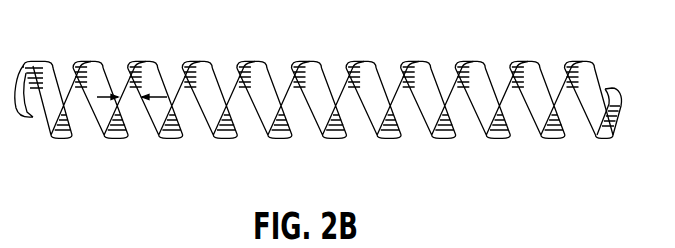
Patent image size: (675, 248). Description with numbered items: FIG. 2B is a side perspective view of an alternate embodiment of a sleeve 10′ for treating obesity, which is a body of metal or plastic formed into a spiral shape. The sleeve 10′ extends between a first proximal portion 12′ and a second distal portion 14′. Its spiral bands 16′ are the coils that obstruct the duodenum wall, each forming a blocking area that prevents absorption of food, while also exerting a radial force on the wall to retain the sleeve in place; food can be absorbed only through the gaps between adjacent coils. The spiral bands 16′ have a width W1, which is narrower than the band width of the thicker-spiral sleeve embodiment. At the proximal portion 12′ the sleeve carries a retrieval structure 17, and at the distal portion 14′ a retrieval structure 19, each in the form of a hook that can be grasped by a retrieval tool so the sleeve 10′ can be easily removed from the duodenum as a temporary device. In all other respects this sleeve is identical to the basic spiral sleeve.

The sleeve 10′ is at (333, 108).
The proximal portion 12′ is at (53, 50).
The distal portion 14′ is at (589, 49).
The spiral bands 16′ is at (230, 139).
The retrieval structure 17 is at (31, 118).
The retrieval structure 19 is at (608, 88).
The width of the spiral bands W1 is at (157, 97).